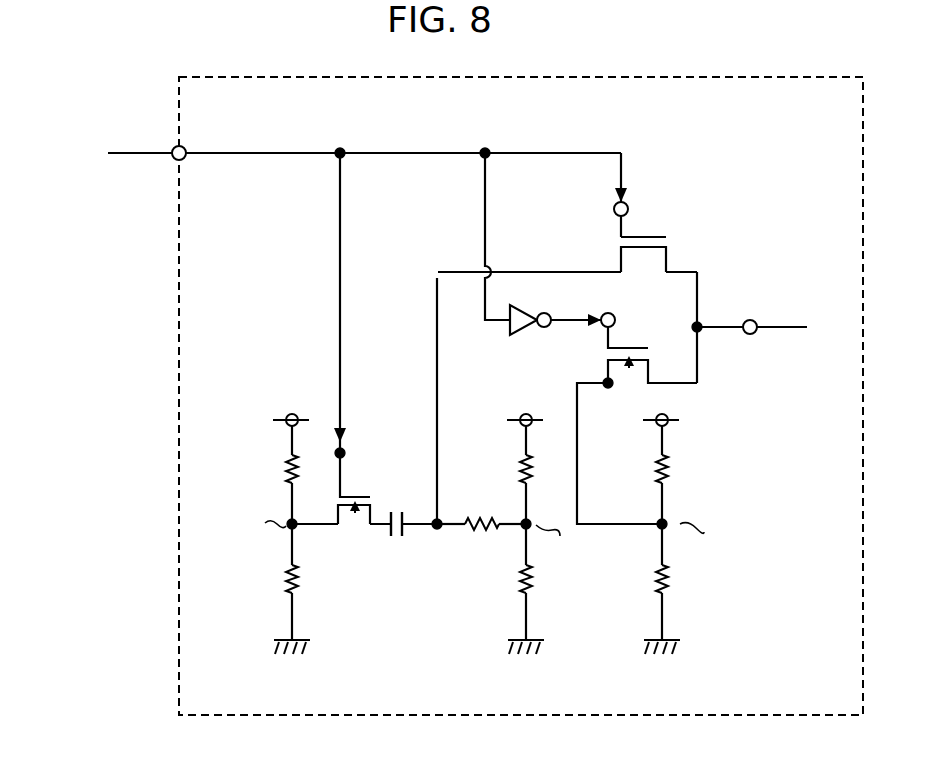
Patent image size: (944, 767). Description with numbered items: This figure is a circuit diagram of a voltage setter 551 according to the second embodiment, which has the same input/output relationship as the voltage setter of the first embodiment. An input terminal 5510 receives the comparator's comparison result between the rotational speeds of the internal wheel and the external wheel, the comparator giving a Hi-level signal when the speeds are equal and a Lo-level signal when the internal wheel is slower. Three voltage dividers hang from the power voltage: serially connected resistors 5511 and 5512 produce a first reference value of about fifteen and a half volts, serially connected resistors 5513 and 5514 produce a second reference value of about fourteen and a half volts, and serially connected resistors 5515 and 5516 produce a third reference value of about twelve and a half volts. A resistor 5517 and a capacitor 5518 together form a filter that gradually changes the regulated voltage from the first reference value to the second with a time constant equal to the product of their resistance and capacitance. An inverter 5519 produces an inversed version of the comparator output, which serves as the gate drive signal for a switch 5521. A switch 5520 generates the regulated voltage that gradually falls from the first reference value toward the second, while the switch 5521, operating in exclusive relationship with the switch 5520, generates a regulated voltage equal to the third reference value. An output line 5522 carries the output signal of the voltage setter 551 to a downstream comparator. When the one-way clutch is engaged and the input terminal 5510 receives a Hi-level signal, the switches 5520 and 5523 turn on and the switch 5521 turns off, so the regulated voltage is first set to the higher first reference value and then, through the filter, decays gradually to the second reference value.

The voltage setter 551 is at (214, 716).
The input terminal 5510 is at (136, 152).
The resistor 5511 is at (235, 470).
The resistor 5512 is at (235, 583).
The resistor 5513 is at (548, 443).
The resistor 5514 is at (558, 596).
The resistor 5515 is at (725, 470).
The resistor 5516 is at (720, 585).
The resistor 5517 is at (473, 567).
The capacitor 5518 is at (397, 540).
The inverter 5519 is at (523, 305).
The switch 5520 is at (645, 220).
The switch 5521 is at (662, 338).
The output line 5522 is at (773, 328).
The switch 5523 is at (325, 545).